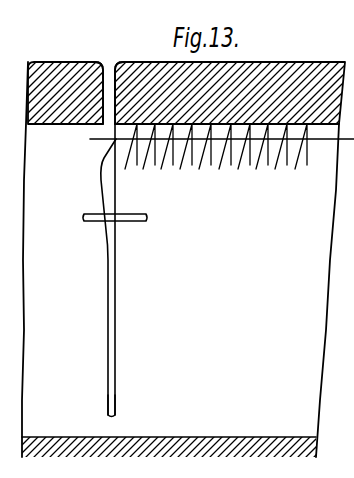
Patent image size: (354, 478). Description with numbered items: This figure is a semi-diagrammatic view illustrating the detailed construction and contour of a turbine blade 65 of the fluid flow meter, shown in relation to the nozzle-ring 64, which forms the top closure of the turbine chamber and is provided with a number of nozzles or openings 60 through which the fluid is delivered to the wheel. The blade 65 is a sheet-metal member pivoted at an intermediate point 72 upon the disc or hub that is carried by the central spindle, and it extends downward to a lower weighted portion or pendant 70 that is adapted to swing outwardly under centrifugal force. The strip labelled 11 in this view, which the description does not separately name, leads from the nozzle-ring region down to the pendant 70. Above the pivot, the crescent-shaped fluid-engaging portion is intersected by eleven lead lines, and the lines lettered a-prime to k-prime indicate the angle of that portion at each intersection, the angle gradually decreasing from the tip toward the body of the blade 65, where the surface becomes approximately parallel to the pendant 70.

The nozzles or openings 60 is at (111, 72).
The nozzle-ring 64 is at (250, 63).
The electrode strip 11 is at (101, 160).
The intermediate pivot point 72 is at (141, 213).
The turbine blade 65 is at (86, 311).
The lower weighted portion or pendant 70 is at (107, 401).